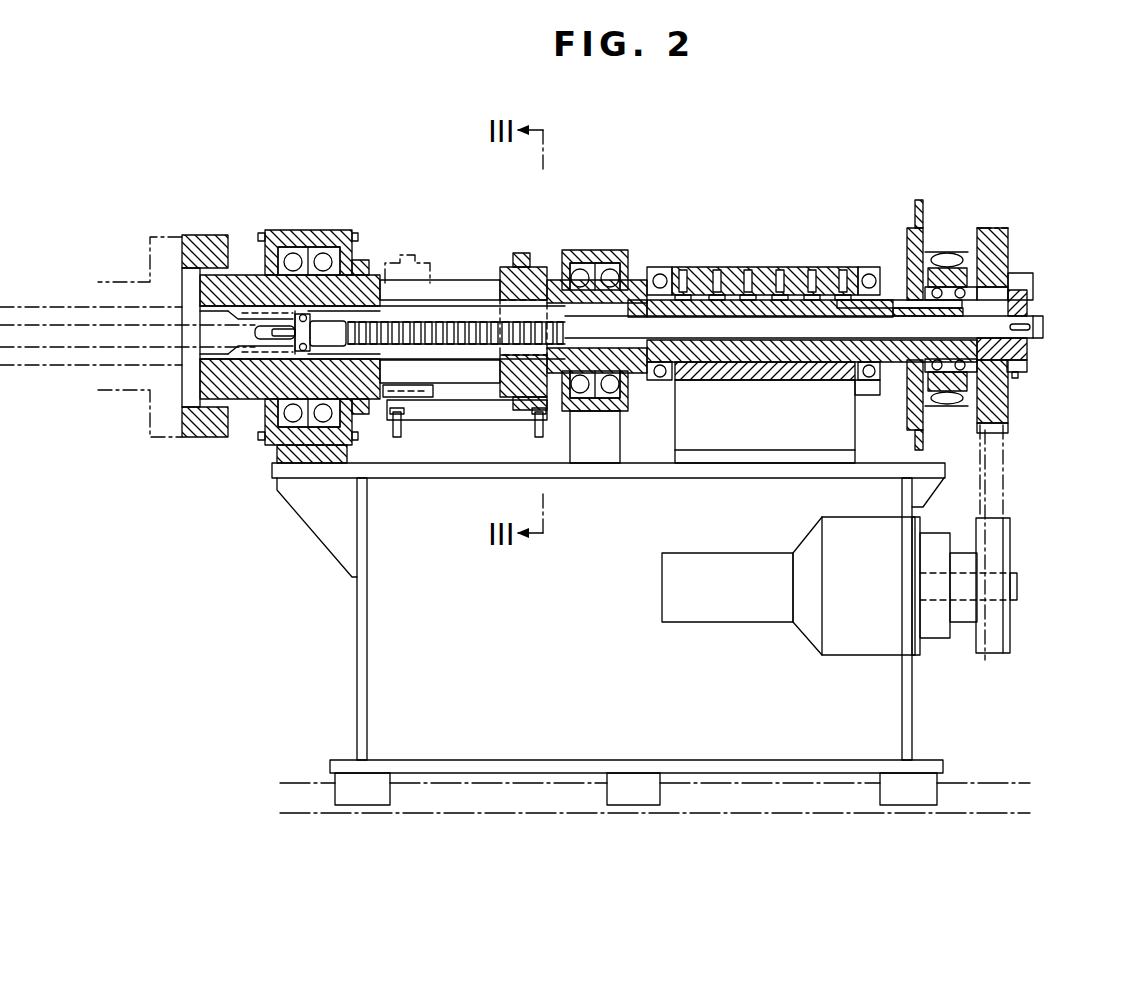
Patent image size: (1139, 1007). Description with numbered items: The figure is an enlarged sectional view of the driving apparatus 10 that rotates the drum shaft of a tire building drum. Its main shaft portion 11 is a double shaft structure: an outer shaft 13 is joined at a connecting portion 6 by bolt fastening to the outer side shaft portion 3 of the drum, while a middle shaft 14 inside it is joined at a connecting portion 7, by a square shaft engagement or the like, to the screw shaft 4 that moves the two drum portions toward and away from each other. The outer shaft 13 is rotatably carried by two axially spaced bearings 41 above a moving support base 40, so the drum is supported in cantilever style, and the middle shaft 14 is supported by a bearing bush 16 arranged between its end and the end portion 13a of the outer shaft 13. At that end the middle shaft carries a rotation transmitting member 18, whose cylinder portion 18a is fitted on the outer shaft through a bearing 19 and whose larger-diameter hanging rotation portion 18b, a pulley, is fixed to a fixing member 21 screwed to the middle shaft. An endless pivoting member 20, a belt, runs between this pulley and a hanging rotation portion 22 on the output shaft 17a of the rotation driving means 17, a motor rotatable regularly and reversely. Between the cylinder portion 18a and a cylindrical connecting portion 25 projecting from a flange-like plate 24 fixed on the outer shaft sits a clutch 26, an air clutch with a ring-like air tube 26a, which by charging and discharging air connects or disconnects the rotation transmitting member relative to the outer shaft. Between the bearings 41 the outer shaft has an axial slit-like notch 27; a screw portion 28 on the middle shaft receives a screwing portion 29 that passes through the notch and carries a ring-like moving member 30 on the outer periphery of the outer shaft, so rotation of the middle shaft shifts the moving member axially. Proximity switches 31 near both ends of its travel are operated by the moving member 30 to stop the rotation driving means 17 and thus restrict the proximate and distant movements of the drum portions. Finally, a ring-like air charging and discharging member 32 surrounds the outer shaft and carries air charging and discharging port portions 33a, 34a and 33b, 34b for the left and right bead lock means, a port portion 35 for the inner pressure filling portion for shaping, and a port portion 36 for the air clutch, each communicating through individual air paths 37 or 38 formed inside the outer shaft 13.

The outer side shaft portion 3 is at (125, 390).
The screw shaft 4 is at (85, 347).
The connecting portion 6 is at (205, 235).
The connecting portion 7 is at (267, 350).
The driving apparatus 10 is at (282, 165).
The main shaft portion 11 is at (770, 512).
The outer shaft 13 is at (717, 357).
The end portion 13a is at (1030, 368).
The middle shaft 14 is at (755, 332).
The bearing bush 16 is at (1040, 338).
The rotation driving means 17 is at (862, 625).
The output shaft 17a is at (968, 583).
The rotation transmitting member 18 is at (1010, 237).
The cylinder portion 18a is at (985, 430).
The hanging rotation portion 18b is at (1010, 246).
The bearing 19 is at (1010, 395).
The pivoting member 20 is at (1003, 485).
The fixing member 21 is at (1036, 290).
The hanging rotation portion 22 is at (1010, 607).
The flange-like plate 24 is at (910, 232).
The connecting portion 25 is at (948, 253).
The clutch 26 is at (1015, 222).
The air tube 26a is at (958, 240).
The notch 27 is at (455, 282).
The screw portion 28 is at (512, 300).
The screwing portion 29 is at (450, 398).
The moving member 30 is at (483, 420).
The proximity switch 31 is at (394, 437).
The air charging and discharging member 32 is at (747, 202).
The air charging and discharging port portion 33a is at (683, 267).
The air charging and discharging port portion 33b is at (748, 267).
The air charging and discharging port portion 34a is at (717, 267).
The air charging and discharging port portion 34b is at (780, 267).
The air charging and discharging port portion 35 is at (812, 267).
The air charging and discharging port portion 36 is at (854, 227).
The air path 37 is at (555, 292).
The air path 38 is at (897, 300).
The moving support base 40 is at (372, 655).
The bearings 41 is at (312, 230).